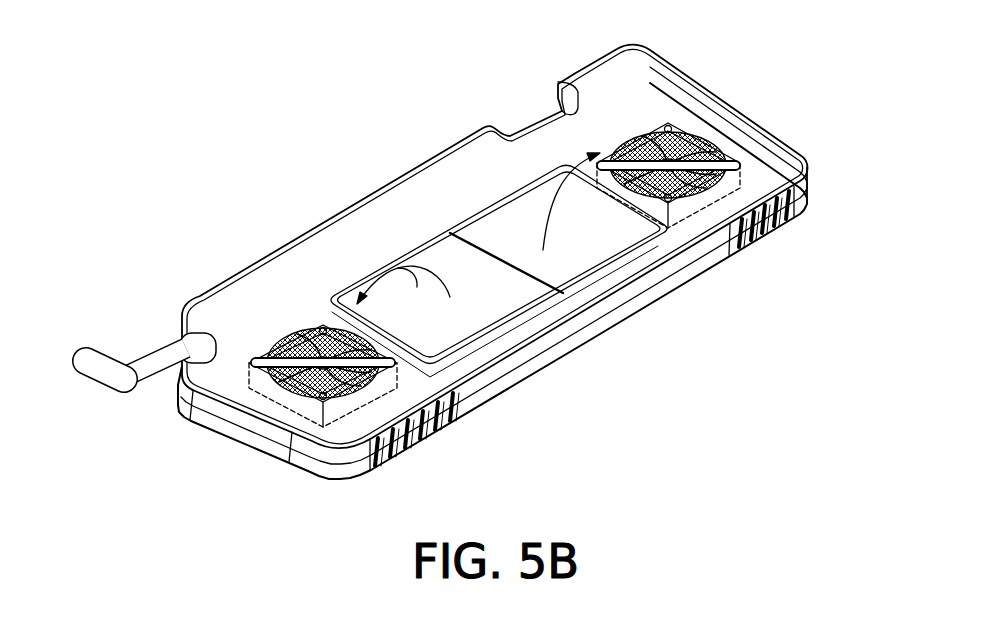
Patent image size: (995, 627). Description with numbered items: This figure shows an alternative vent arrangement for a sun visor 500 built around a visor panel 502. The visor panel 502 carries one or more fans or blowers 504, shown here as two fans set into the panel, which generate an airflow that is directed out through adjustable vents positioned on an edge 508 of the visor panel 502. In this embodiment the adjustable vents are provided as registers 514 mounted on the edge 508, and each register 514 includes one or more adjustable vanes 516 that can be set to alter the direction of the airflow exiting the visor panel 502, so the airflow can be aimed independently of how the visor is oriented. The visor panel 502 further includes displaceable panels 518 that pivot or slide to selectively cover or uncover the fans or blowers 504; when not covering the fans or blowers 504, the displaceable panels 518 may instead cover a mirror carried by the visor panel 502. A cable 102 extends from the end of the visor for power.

The sun visor 500 is at (278, 148).
The visor panel 502 is at (386, 212).
The fans or blowers 504 is at (712, 141).
The edge 508 is at (593, 333).
The registers 514 is at (372, 478).
The adjustable vanes 516 is at (422, 440).
The displaceable panels 518 is at (398, 268).
The power cable 102 is at (143, 362).